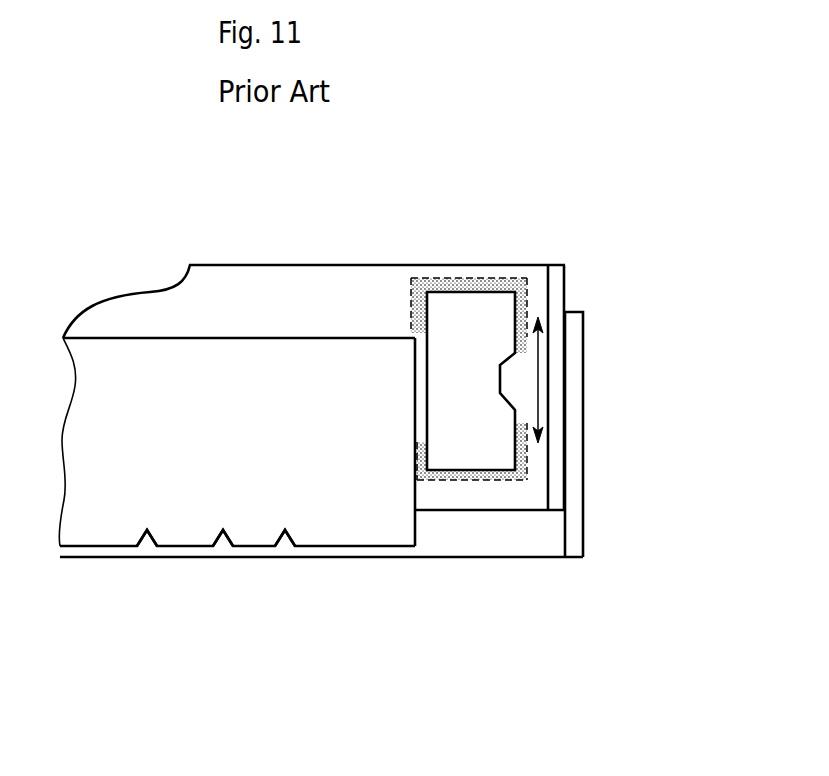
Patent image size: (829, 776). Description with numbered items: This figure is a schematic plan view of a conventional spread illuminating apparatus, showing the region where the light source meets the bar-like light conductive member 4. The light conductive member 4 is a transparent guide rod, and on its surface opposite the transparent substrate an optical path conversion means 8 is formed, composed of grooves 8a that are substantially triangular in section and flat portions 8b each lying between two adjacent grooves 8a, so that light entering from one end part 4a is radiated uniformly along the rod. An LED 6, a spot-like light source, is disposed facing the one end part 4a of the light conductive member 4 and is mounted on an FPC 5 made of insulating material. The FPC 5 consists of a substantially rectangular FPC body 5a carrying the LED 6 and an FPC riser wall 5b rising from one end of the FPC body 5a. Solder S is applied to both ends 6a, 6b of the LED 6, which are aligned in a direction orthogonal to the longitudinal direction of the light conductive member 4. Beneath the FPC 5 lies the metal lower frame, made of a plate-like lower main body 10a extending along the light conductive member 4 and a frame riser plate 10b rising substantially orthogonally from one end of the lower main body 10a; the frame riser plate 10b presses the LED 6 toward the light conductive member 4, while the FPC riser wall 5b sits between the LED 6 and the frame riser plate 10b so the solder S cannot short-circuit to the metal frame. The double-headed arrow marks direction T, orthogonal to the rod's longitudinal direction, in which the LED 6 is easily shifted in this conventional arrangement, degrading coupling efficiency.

The light conductive member 4 is at (108, 507).
The one end part of the light conductive member 4a is at (413, 468).
The FPC 5 is at (373, 177).
The FPC body 5a is at (363, 280).
The FPC riser wall 5b is at (557, 270).
The LED 6 is at (458, 443).
The end of the LED 6a is at (414, 412).
The end of the LED 6b is at (471, 473).
The optical path conversion means 8 is at (138, 638).
The grooves 8a is at (183, 546).
The flat portions 8b is at (225, 546).
The lower main body 10a is at (535, 545).
The frame riser plate 10b is at (575, 480).
The solder S is at (528, 302).
The direction T is at (540, 378).